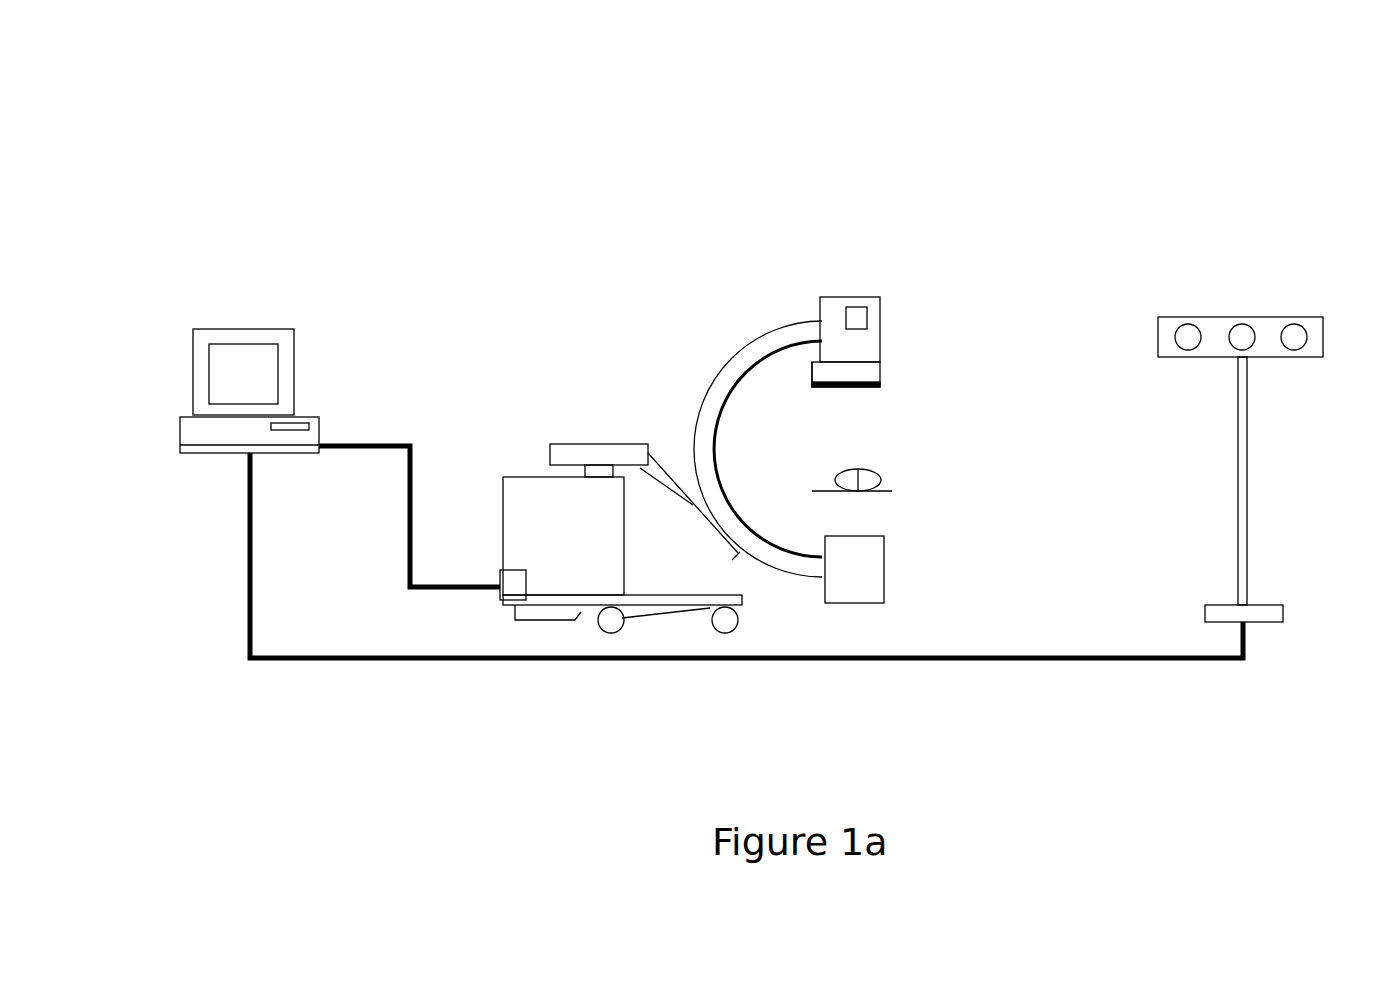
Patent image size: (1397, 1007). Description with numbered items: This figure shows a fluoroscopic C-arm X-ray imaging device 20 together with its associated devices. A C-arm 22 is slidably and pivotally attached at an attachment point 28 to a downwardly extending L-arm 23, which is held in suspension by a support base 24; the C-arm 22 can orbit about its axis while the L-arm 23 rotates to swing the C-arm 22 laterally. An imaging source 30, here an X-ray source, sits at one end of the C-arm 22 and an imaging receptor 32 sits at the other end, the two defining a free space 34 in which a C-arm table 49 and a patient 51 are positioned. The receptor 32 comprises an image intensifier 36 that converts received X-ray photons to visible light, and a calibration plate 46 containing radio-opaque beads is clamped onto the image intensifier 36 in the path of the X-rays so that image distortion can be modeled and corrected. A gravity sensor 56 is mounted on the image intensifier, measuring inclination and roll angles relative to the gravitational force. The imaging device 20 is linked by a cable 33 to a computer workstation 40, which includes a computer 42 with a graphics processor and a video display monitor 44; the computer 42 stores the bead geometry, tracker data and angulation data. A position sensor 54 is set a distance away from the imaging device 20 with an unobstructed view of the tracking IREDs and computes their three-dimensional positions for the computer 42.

The imaging device 20 is at (646, 173).
The C-arm 22 is at (737, 350).
The L-arm 23 is at (655, 447).
The support base 24 is at (527, 482).
The attachment point 28 is at (703, 516).
The imaging source 30 is at (882, 578).
The imaging receptor 32 is at (952, 252).
The cable 33 is at (410, 485).
The free space 34 is at (915, 273).
The image intensifier 36 is at (813, 372).
The computer workstation 40 is at (132, 336).
The computer 42 is at (320, 432).
The video display monitor 44 is at (295, 366).
The calibration plate 46 is at (881, 380).
The C-arm table 49 is at (880, 503).
The patient 51 is at (857, 470).
The position sensor 54 is at (1378, 346).
The gravity sensor 56 is at (857, 317).